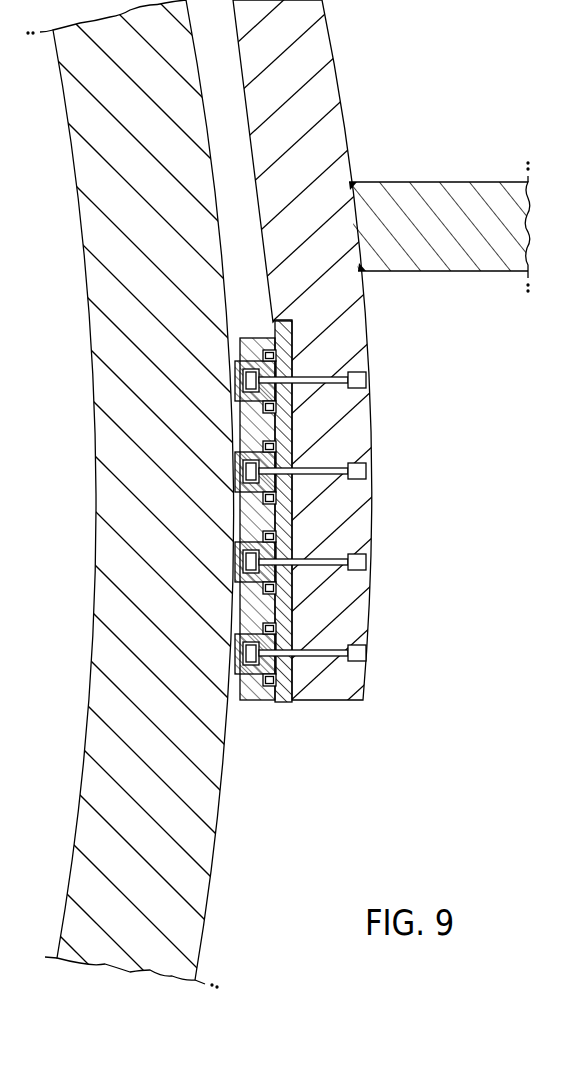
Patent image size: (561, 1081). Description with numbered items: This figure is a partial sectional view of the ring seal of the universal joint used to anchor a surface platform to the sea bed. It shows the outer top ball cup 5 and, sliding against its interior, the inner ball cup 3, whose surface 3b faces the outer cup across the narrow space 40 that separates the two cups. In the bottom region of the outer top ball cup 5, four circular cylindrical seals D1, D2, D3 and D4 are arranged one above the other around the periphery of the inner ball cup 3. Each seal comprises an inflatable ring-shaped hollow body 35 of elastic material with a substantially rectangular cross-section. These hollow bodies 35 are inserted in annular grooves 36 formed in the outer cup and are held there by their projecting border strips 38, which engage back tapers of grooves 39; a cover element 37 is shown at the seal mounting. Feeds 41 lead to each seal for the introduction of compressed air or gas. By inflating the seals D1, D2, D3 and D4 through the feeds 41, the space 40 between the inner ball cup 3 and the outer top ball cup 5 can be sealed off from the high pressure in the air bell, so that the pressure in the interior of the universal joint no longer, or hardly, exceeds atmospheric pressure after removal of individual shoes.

The inner ball cup 3 is at (92, 802).
The inner surface of vessel wall 3b is at (213, 843).
The outer top ball cup 5 is at (322, 42).
The space between the two ball cups 40 is at (227, 151).
The feeds 41 is at (313, 468).
The inflatable ring-shaped hollow bodies 35 is at (240, 666).
The annular grooves 36 is at (246, 702).
The cover 37 is at (239, 635).
The projecting border strips 38 is at (283, 562).
The grooves 39 is at (272, 703).
The circular cylindrical seal D1 is at (218, 373).
The circular cylindrical seal D2 is at (215, 461).
The circular cylindrical seal D3 is at (228, 558).
The circular cylindrical seal D4 is at (210, 680).